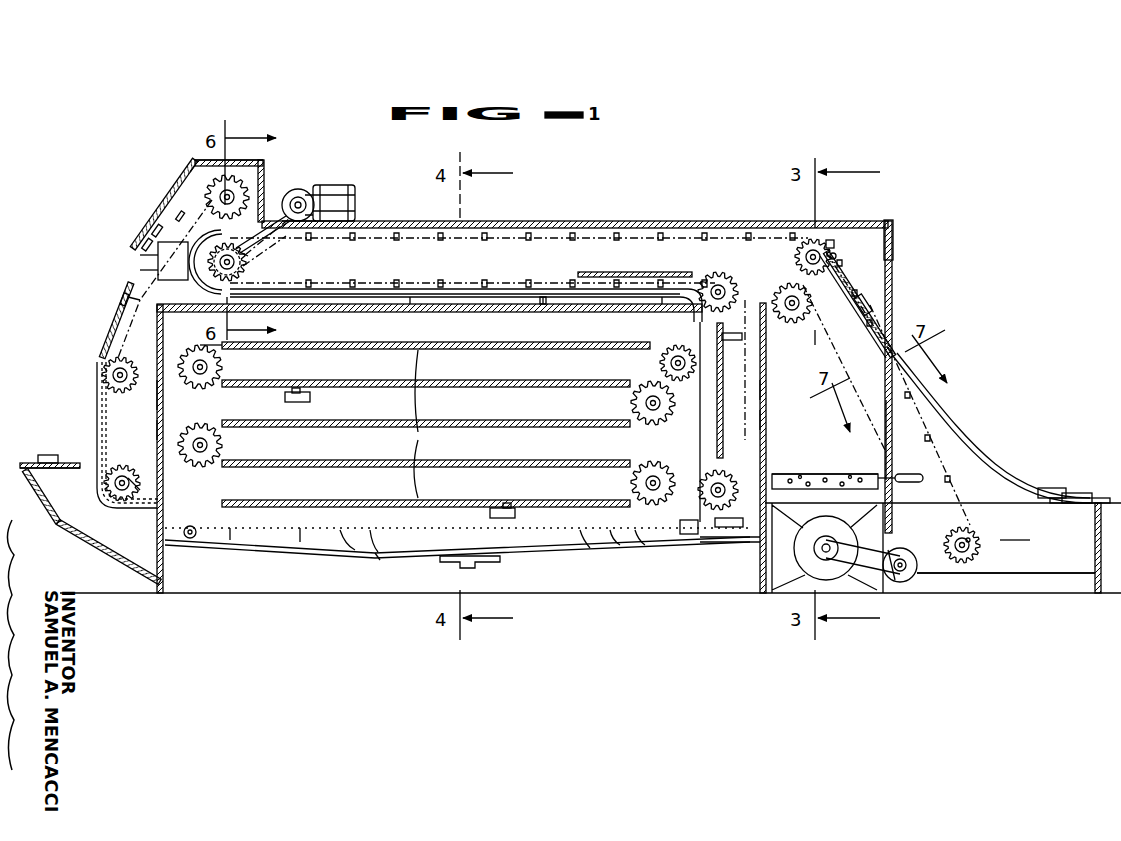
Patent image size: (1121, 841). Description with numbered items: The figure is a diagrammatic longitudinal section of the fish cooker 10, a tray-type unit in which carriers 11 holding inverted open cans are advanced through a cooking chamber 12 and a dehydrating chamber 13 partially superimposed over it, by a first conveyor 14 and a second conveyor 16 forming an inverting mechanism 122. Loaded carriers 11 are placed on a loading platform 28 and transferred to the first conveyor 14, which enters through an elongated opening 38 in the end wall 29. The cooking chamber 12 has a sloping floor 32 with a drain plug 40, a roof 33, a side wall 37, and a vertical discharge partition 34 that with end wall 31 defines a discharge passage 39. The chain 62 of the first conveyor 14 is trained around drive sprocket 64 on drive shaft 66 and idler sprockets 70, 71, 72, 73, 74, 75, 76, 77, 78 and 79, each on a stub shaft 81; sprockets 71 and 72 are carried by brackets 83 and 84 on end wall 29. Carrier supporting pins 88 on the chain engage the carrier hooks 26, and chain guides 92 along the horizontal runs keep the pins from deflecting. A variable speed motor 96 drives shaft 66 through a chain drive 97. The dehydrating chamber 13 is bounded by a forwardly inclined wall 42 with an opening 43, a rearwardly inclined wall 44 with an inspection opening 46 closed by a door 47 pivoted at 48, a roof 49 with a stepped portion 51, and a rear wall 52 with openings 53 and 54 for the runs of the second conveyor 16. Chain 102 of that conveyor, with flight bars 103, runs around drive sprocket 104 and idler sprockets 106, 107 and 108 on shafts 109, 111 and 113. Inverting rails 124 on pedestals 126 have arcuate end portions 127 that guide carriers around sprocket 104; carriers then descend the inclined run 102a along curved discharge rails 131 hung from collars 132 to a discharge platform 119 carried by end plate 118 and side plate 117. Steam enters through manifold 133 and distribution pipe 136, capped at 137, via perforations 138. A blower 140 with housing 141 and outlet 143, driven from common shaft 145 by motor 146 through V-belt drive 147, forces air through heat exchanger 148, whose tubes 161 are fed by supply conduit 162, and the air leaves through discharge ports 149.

The fish cooker 10 is at (652, 205).
The carriers 11 is at (398, 282).
The cooking chamber 12 is at (175, 395).
The dehydrating chamber 13 is at (535, 248).
The first conveyor 14 is at (193, 195).
The second conveyor 16 is at (488, 245).
The carrier support hooks 26 is at (292, 392).
The loading platform 28 is at (35, 463).
The end wall 29 is at (158, 431).
The end wall 31 is at (768, 425).
The sloping floor 32 is at (388, 556).
The roof 33 is at (429, 319).
The vertical discharge partition 34 is at (715, 438).
The side wall 37 is at (436, 424).
The horizontally elongated opening 38 is at (158, 545).
The discharge passage 39 is at (762, 392).
The drain plug 40 is at (470, 566).
The forwardly inclined wall 42 is at (158, 286).
The opening 43 is at (150, 300).
The rearwardly inclined wall 44 is at (190, 170).
The inspection opening 46 is at (153, 240).
The door 47 is at (166, 227).
The pivot 48 is at (188, 213).
The roof 49 is at (205, 162).
The stepped portion 51 is at (236, 186).
The rear wall 52 is at (894, 252).
The upper opening 53 is at (895, 338).
The lower opening 54 is at (884, 440).
The endless chain 62 is at (108, 348).
The drive sprocket 64 is at (250, 256).
The drive shaft 66 is at (212, 286).
The idler sprocket 70 is at (270, 193).
The idler sprocket 71 is at (103, 372).
The idler sprocket 72 is at (138, 482).
The idler sprocket 73 is at (630, 485).
The idler sprocket 74 is at (222, 447).
The idler sprocket 75 is at (630, 403).
The idler sprocket 76 is at (222, 368).
The idler sprocket 77 is at (660, 358).
The idler sprocket 78 is at (705, 500).
The idler sprocket 79 is at (700, 308).
The stub shaft 81 is at (103, 382).
The bracket 83 is at (205, 347).
The bracket 84 is at (148, 470).
The carrier supporting pins 88 is at (108, 338).
The chain guide 92 is at (400, 350).
The variable speed motor 96 is at (338, 188).
The chain drive 97 is at (300, 195).
The chain 102 is at (605, 240).
The inclined run 102a is at (935, 420).
The flight bars 103 is at (392, 235).
The drive sprocket 104 is at (248, 264).
The idler sprocket 106 is at (797, 253).
The idler sprocket 107 is at (980, 548).
The idler sprocket 108 is at (788, 282).
The shaft 109 is at (838, 259).
The shaft 111 is at (802, 332).
The shaft 113 is at (975, 540).
The vertical side plate 117 is at (1039, 544).
The end plate 118 is at (1092, 576).
The discharge platform 119 is at (1100, 490).
The inverting mechanism 122 is at (186, 270).
The conveyor interchange and carrier inverting rails 124 is at (548, 305).
The pedestals 126 is at (252, 312).
The arcuate end portions 127 is at (180, 264).
The curved discharge rails 131 is at (985, 465).
The collars 132 is at (835, 244).
The manifold 133 is at (188, 540).
The steam distribution pipe 136 is at (255, 545).
The caps 137 is at (695, 540).
The perforations 138 is at (362, 540).
The blower 140 is at (795, 556).
The housing 141 is at (792, 545).
The flared outlet opening 143 is at (845, 478).
The common shaft 145 is at (826, 548).
The motor 146 is at (915, 575).
The V-belt drive 147 is at (898, 552).
The heat exchanger 148 is at (830, 470).
The discharge ports 149 is at (185, 249).
The tubes 161 is at (815, 478).
The supply conduit 162 is at (915, 472).